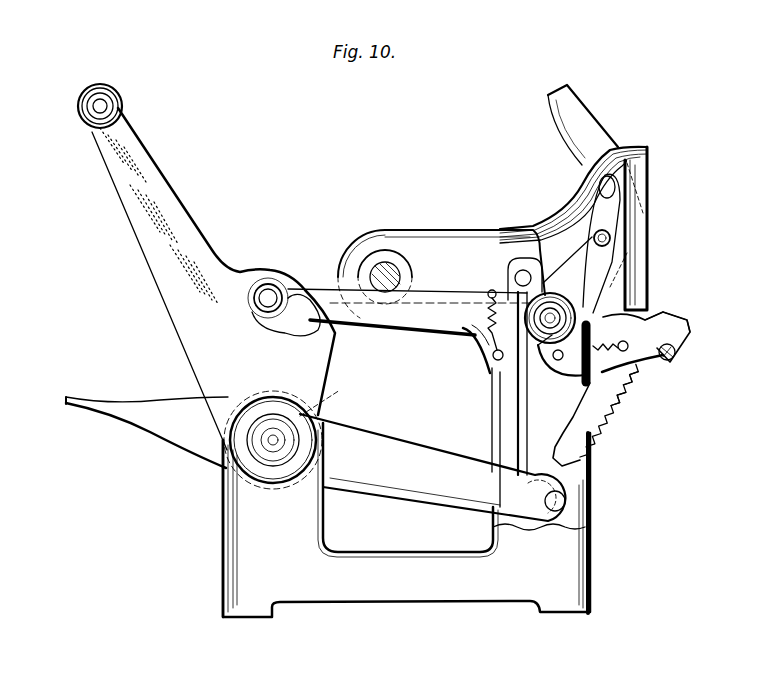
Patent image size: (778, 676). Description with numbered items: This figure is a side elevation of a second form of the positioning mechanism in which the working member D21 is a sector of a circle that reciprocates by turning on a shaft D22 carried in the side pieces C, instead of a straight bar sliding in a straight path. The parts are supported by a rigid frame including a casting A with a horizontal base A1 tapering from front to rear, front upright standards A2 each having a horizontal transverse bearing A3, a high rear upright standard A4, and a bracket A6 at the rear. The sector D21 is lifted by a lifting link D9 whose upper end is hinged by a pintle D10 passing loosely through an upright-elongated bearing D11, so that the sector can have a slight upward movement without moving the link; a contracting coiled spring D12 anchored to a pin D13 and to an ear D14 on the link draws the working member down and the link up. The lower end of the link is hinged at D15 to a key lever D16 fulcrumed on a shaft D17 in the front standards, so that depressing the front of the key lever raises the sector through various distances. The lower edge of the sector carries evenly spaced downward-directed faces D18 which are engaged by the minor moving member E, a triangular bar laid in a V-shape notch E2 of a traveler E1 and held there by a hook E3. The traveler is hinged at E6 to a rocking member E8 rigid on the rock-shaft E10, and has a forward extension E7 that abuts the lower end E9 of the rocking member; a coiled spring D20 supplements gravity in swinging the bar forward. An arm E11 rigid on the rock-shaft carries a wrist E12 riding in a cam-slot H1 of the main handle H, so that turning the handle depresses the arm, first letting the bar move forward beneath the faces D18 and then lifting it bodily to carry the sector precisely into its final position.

The casting A is at (406, 532).
The horizontal base A1 is at (420, 562).
The upright standard A2 is at (240, 522).
The horizontal transverse bearing A3 is at (233, 400).
The upright standard A4 is at (585, 478).
The curved bracket A6 is at (578, 220).
The side piece C is at (352, 253).
The lifting link D9 is at (512, 410).
The pintle D10 is at (518, 275).
The bearing D11 is at (523, 276).
The contracting coiled spring D12 is at (480, 342).
The pin D13 is at (490, 290).
The ear D14 is at (495, 365).
The hinge D15 is at (566, 503).
The key lever D16 is at (153, 412).
The shaft D17 is at (320, 410).
The faces D18 is at (622, 375).
The contracting coiled spring D20 is at (628, 385).
The working member D21 is at (430, 262).
The shaft D22 is at (385, 267).
The minor moving member E is at (677, 317).
The traveler E1 is at (675, 357).
The V-shape notch E2 is at (688, 334).
The hook E3 is at (663, 311).
The hinge E6 is at (612, 239).
The forward extension E7 is at (617, 400).
The rocking member E8 is at (582, 240).
The lower end of rocking member E9 is at (577, 378).
The rock-shaft E10 is at (494, 357).
The arm E11 is at (330, 297).
The wrist E12 is at (268, 290).
The main handle H is at (135, 140).
The cam-slot H1 is at (313, 336).